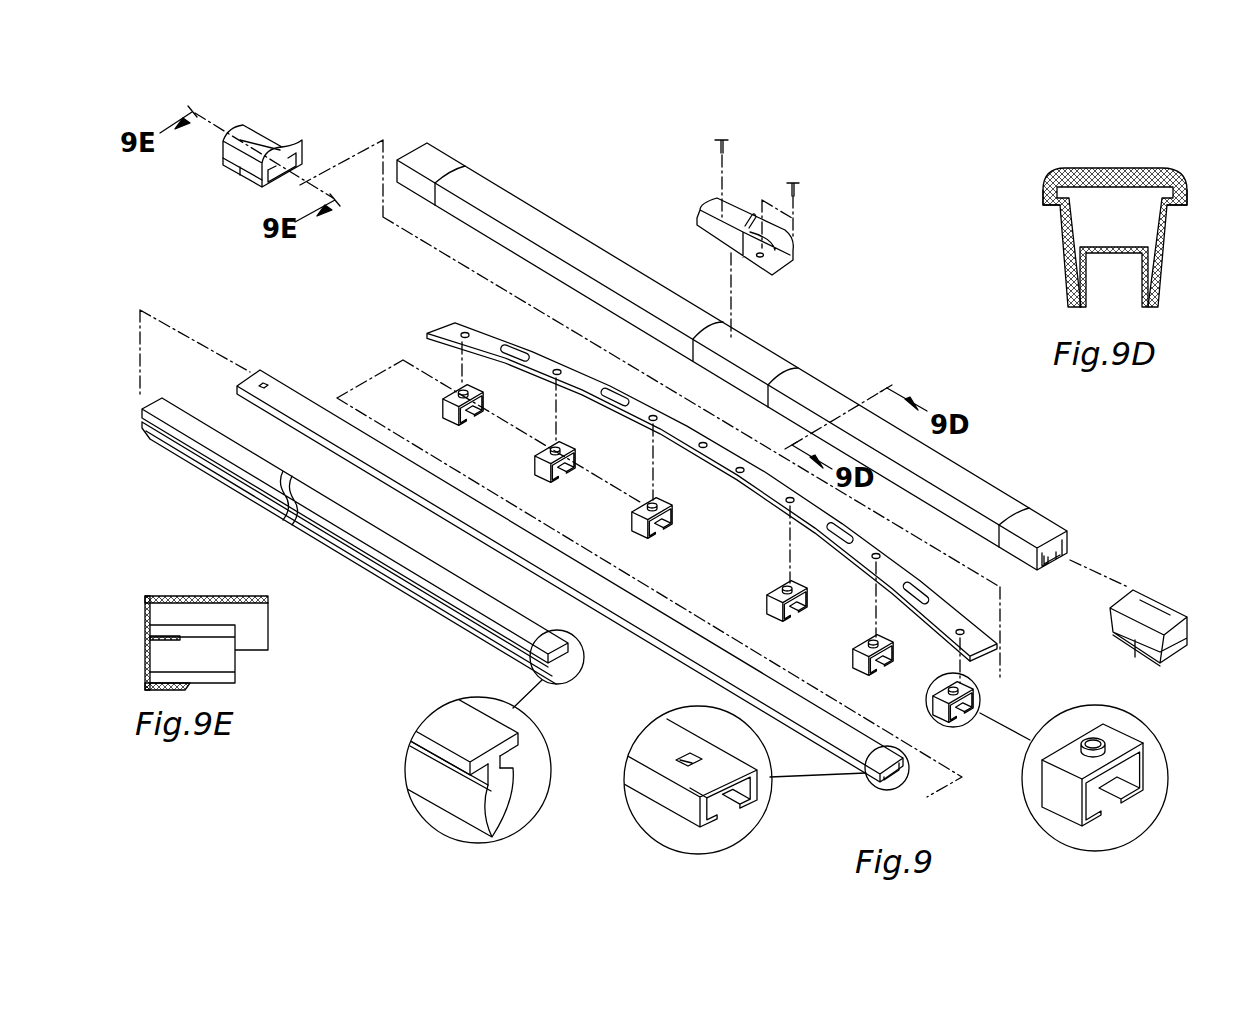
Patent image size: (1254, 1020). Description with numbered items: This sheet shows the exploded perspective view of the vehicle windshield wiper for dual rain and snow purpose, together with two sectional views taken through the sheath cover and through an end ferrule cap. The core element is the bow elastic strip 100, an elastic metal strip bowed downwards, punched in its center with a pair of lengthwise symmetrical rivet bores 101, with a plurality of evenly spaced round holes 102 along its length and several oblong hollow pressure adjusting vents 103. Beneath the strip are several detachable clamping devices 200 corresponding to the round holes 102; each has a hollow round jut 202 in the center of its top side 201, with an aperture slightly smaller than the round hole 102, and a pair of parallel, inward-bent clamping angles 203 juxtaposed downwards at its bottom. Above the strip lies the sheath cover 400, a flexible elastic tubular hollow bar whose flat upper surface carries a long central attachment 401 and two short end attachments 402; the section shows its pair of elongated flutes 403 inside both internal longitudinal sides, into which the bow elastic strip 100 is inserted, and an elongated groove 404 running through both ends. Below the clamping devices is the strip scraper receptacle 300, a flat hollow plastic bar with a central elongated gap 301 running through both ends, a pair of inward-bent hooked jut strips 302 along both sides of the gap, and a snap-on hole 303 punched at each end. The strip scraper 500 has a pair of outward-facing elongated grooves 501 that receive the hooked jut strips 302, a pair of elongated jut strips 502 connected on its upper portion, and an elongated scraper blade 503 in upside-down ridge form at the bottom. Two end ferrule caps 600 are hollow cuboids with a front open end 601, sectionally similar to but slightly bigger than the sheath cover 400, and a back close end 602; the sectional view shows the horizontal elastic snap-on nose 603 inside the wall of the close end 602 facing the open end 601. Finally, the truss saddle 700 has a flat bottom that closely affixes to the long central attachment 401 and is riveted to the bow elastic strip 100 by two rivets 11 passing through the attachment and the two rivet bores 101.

In FIG. 9, the rivet 11 is at (798, 183).
In FIG. 9, the bow elastic strip 100 is at (628, 405).
In FIG. 9, the rivet bore 101 is at (740, 474).
In FIG. 9, the round hole 102 is at (462, 330).
In FIG. 9, the pressure adjusting vent 103 is at (517, 360).
In FIG. 9, the clamping device 200 is at (1055, 795).
In FIG. 9, the top side 201 is at (1125, 745).
In FIG. 9, the hollow round jut 202 is at (1093, 740).
In FIG. 9, the clamping angle 203 is at (1095, 822).
In FIG. 9, the strip scraper receptacle 300 is at (660, 730).
In FIG. 9, the elongated gap 301 is at (724, 806).
In FIG. 9, the hooked jut strip 302 is at (712, 815).
In FIG. 9, the snap-on hole 303 is at (682, 760).
In FIG. 9, the sheath cover 400 is at (626, 270).
In FIG. 9D, the sheath cover 400 is at (1100, 210).
In FIG. 9, the long central attachment 401 is at (757, 357).
In FIG. 9, the short end attachment 402 is at (1042, 505).
In FIG. 9D, the elongated flute 403 is at (1182, 192).
In FIG. 9, the elongated groove 404 is at (1050, 565).
In FIG. 9D, the elongated groove 404 is at (1113, 262).
In FIG. 9, the strip scraper 500 is at (447, 718).
In FIG. 9, the elongated groove 501 is at (460, 775).
In FIG. 9, the elongated jut strip 502 is at (445, 758).
In FIG. 9, the scraper blade 503 is at (497, 810).
In FIG. 9, the end ferrule cap 600 is at (1150, 600).
In FIG. 9, the open end 601 is at (1127, 585).
In FIG. 9E, the open end 601 is at (255, 633).
In FIG. 9, the close end 602 is at (1172, 645).
In FIG. 9E, the close end 602 is at (148, 596).
In FIG. 9E, the snap-on nose 603 is at (180, 638).
In FIG. 9, the truss saddle 700 is at (782, 243).